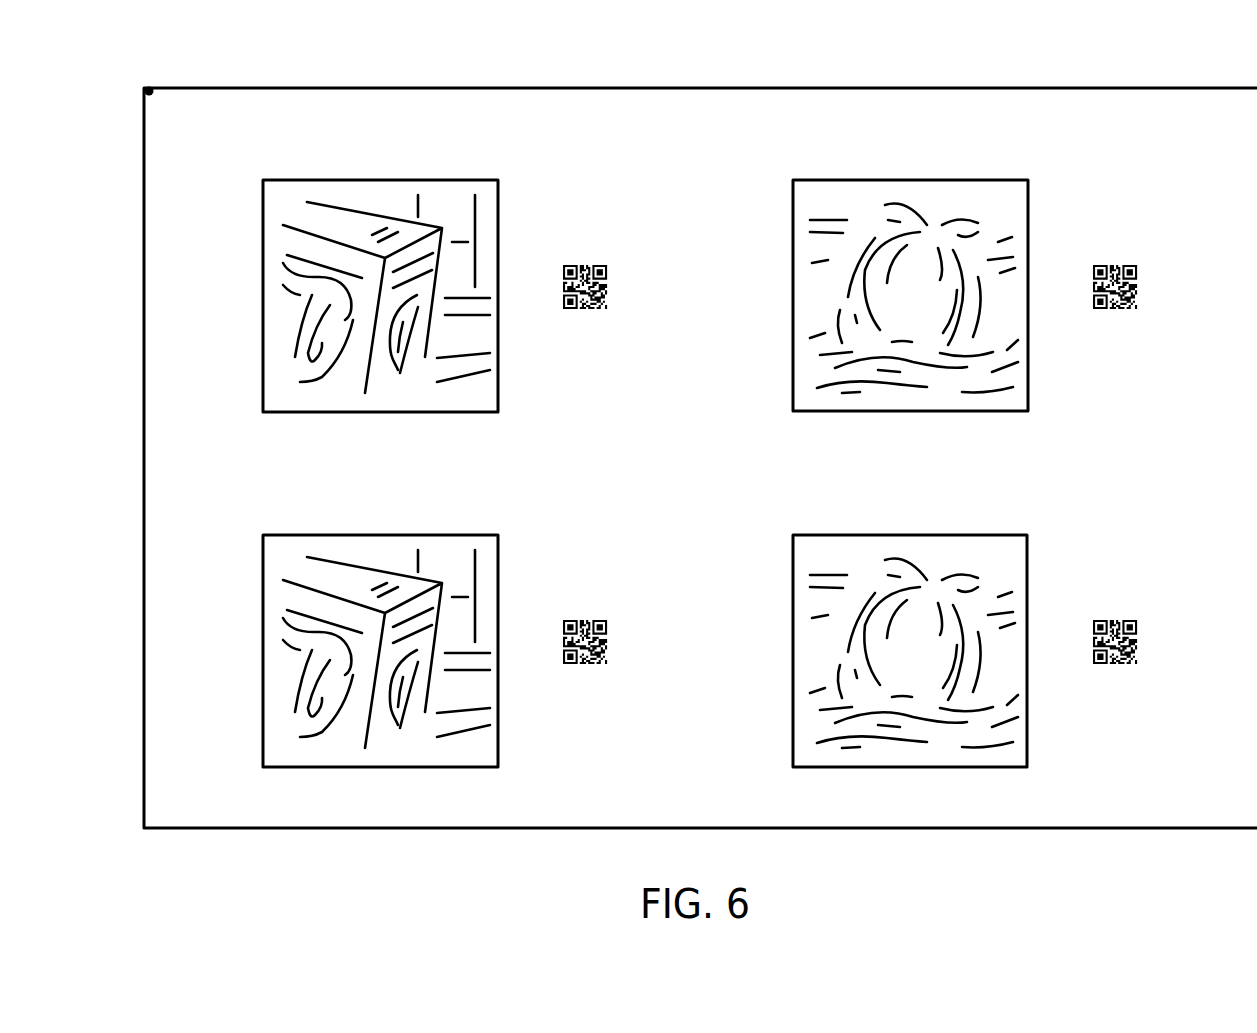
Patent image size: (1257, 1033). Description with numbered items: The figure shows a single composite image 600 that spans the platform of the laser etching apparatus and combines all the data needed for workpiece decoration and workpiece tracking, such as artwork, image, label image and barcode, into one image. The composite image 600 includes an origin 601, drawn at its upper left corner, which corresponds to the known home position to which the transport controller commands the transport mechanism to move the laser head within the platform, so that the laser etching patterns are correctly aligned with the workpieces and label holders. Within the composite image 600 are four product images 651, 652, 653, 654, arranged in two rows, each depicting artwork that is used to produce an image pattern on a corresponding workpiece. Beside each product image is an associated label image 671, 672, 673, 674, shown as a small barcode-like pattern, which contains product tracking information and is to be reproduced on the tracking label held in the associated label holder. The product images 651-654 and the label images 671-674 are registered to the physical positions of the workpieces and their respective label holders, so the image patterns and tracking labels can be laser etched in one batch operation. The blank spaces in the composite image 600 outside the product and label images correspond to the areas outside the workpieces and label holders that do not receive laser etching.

The single composite image 600 is at (1142, 87).
The origin 601 is at (145, 88).
The product image 651 is at (462, 183).
The product image 652 is at (985, 183).
The product image 653 is at (462, 538).
The product image 654 is at (985, 538).
The label image 671 is at (593, 265).
The label image 672 is at (1117, 265).
The label image 673 is at (593, 620).
The label image 674 is at (1117, 620).